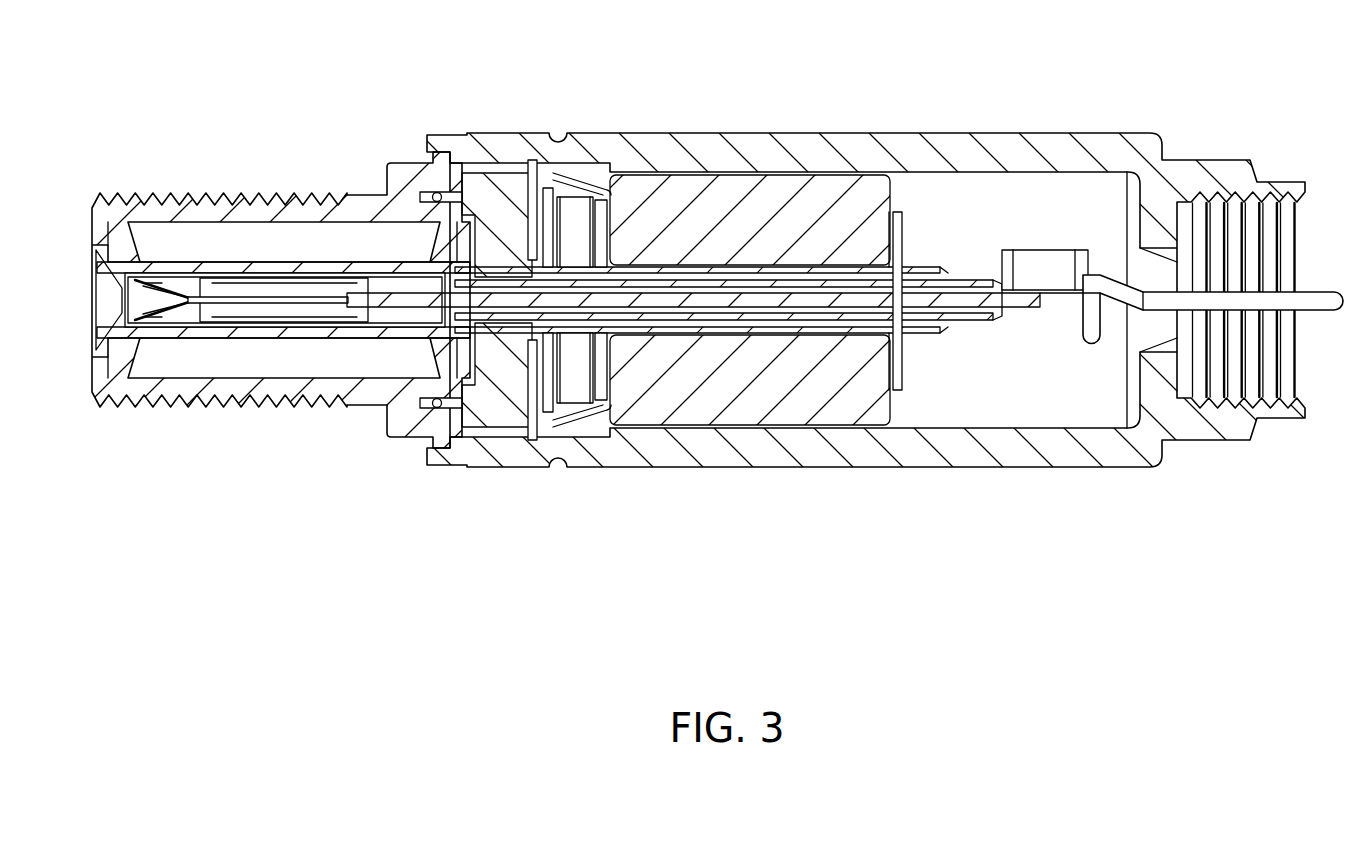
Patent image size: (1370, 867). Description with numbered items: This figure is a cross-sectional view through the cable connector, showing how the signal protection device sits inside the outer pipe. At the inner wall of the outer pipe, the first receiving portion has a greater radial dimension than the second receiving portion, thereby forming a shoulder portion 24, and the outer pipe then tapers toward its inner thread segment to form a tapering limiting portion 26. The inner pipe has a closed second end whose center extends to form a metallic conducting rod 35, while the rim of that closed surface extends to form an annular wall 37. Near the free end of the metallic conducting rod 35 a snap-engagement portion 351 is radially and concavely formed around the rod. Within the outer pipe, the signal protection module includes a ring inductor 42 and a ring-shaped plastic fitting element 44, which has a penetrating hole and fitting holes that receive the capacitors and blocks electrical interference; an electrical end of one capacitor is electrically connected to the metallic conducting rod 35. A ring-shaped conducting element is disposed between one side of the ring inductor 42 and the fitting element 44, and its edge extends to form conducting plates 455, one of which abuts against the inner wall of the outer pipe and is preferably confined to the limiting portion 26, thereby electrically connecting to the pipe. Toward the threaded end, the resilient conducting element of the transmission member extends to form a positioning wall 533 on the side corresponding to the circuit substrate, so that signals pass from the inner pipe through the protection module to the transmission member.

The shoulder portion 24 is at (477, 150).
The annular wall 37 is at (537, 257).
The limiting portion 26 is at (558, 172).
The conducting plate 455 is at (598, 177).
The ring inductor 42 is at (773, 195).
The positioning wall 533 is at (895, 213).
The metallic conducting rod 35 is at (928, 272).
The fitting element 44 is at (537, 387).
The snap-engagement portion 351 is at (897, 290).